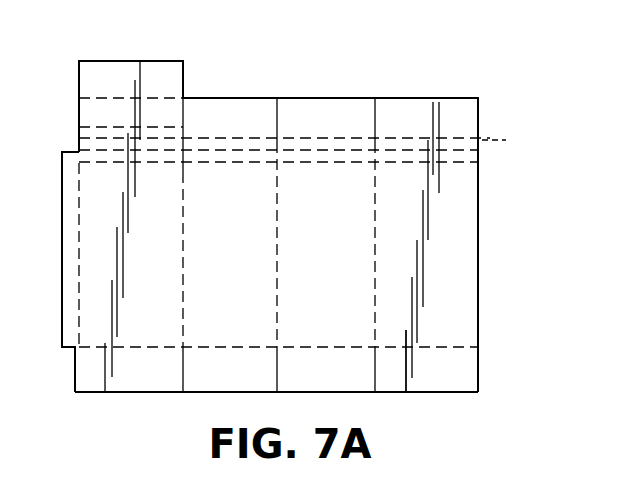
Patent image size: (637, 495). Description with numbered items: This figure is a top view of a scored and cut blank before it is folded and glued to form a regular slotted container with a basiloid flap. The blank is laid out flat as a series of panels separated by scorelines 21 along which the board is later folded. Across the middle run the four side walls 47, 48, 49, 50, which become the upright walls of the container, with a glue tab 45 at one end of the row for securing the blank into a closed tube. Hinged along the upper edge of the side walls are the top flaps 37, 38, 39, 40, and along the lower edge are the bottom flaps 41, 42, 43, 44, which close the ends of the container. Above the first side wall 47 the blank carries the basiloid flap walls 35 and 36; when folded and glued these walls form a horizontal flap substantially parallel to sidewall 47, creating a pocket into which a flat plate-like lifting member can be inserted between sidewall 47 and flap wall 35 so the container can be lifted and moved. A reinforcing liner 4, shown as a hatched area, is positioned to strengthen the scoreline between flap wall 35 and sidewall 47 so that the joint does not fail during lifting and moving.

The reinforcing liner 4 is at (503, 141).
The scorelines 21 is at (378, 240).
The basiloid flap wall 35 is at (87, 134).
The basiloid flap wall 36 is at (86, 117).
The top flap 37 is at (113, 72).
The top flap 38 is at (236, 107).
The top flap 39 is at (322, 107).
The top flap 40 is at (418, 106).
The bottom flap 41 is at (141, 376).
The bottom flap 42 is at (236, 376).
The bottom flap 43 is at (333, 376).
The bottom flap 44 is at (450, 375).
The glue tab 45 is at (67, 244).
The side wall 47 is at (133, 270).
The side wall 48 is at (214, 270).
The side wall 49 is at (321, 270).
The side wall 50 is at (432, 270).